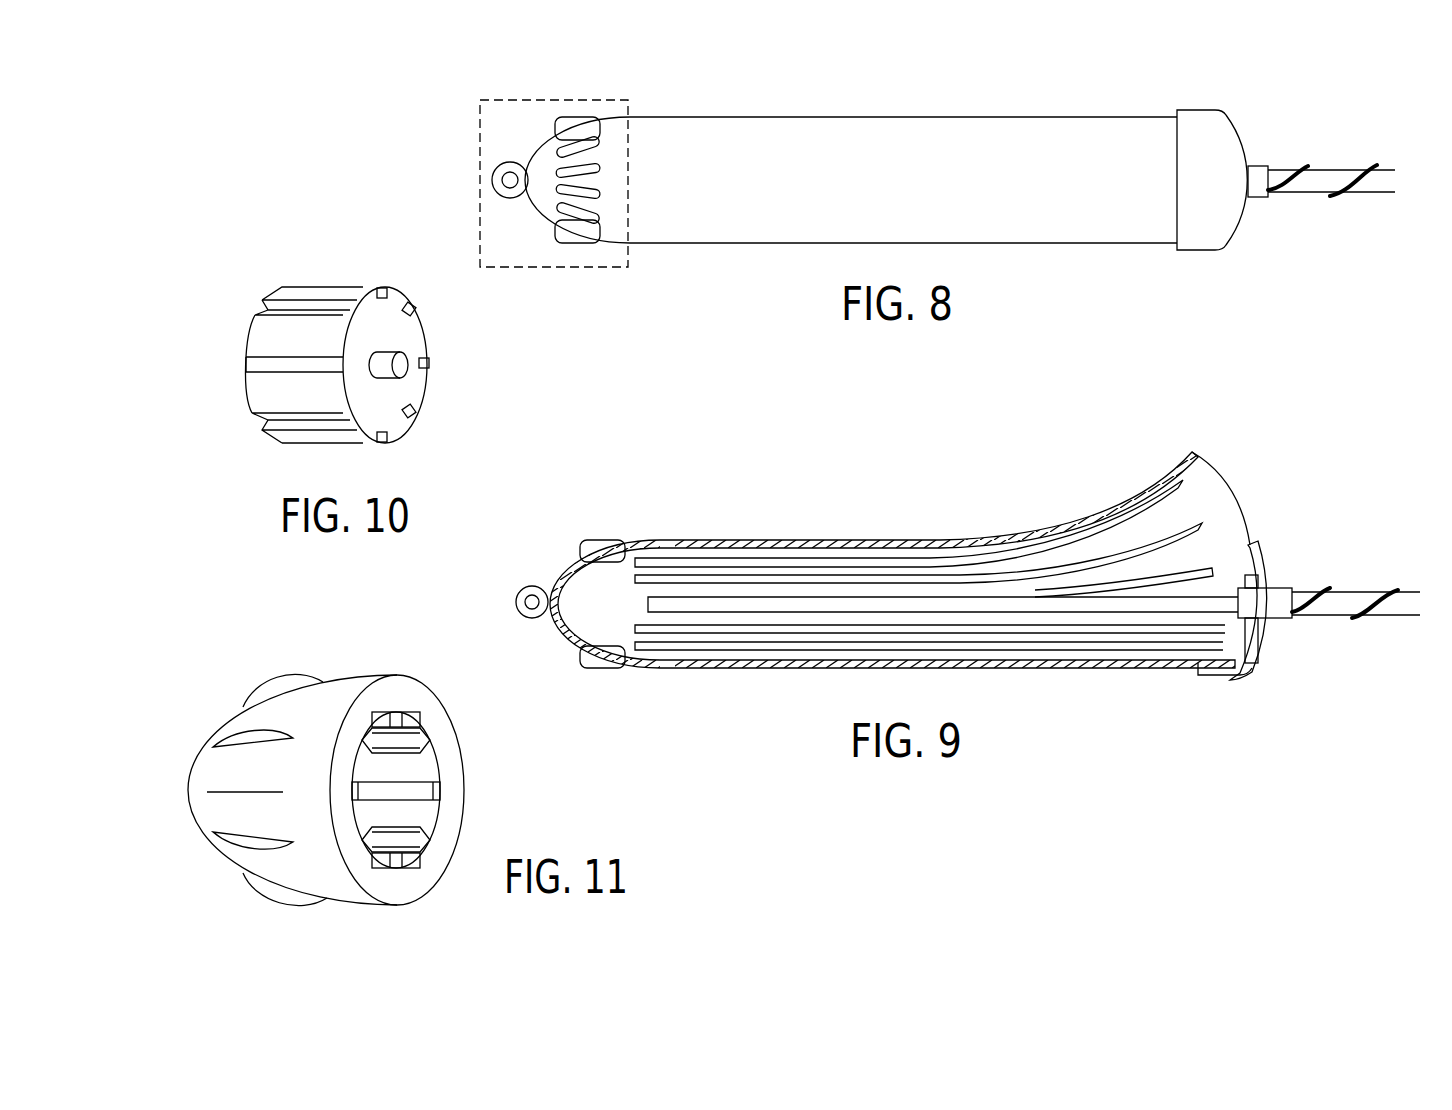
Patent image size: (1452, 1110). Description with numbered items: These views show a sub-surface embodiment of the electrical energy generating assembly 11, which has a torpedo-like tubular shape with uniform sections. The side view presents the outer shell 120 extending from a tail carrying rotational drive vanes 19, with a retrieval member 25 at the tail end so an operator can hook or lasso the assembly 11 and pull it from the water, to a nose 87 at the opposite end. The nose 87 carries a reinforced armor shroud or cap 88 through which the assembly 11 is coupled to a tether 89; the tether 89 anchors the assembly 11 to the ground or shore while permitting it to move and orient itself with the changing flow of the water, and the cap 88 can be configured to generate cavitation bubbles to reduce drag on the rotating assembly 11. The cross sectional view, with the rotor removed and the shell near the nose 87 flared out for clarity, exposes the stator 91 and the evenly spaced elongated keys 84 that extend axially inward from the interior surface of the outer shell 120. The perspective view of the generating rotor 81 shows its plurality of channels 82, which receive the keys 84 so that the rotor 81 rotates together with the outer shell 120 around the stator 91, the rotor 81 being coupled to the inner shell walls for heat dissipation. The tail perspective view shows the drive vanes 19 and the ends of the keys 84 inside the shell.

In FIG. 8, the assembly 11 is at (1033, 100).
In FIG. 9, the assembly 11 is at (1019, 468).
In FIG. 8, the rotational drive vanes 19 is at (577, 122).
In FIG. 9, the rotational drive vanes 19 is at (602, 604).
In FIG. 11, the rotational drive vanes 19 is at (275, 680).
In FIG. 8, the retrieval member 25 is at (493, 175).
In FIG. 10, the generating rotor 81 is at (312, 292).
In FIG. 10, the channels 82 is at (236, 364).
In FIG. 9, the elongated keys 84 is at (820, 562).
In FIG. 11, the elongated keys 84 is at (365, 730).
In FIG. 8, the nose 87 is at (1206, 96).
In FIG. 9, the nose 87 is at (1271, 689).
In FIG. 8, the cap 88 is at (1228, 128).
In FIG. 9, the cap 88 is at (1263, 550).
In FIG. 8, the tether 89 is at (1325, 178).
In FIG. 9, the tether 89 is at (1355, 598).
In FIG. 9, the stator 91 is at (668, 600).
In FIG. 10, the stator 91 is at (402, 362).
In FIG. 8, the outer shell 120 is at (807, 117).
In FIG. 9, the outer shell 120 is at (1053, 668).